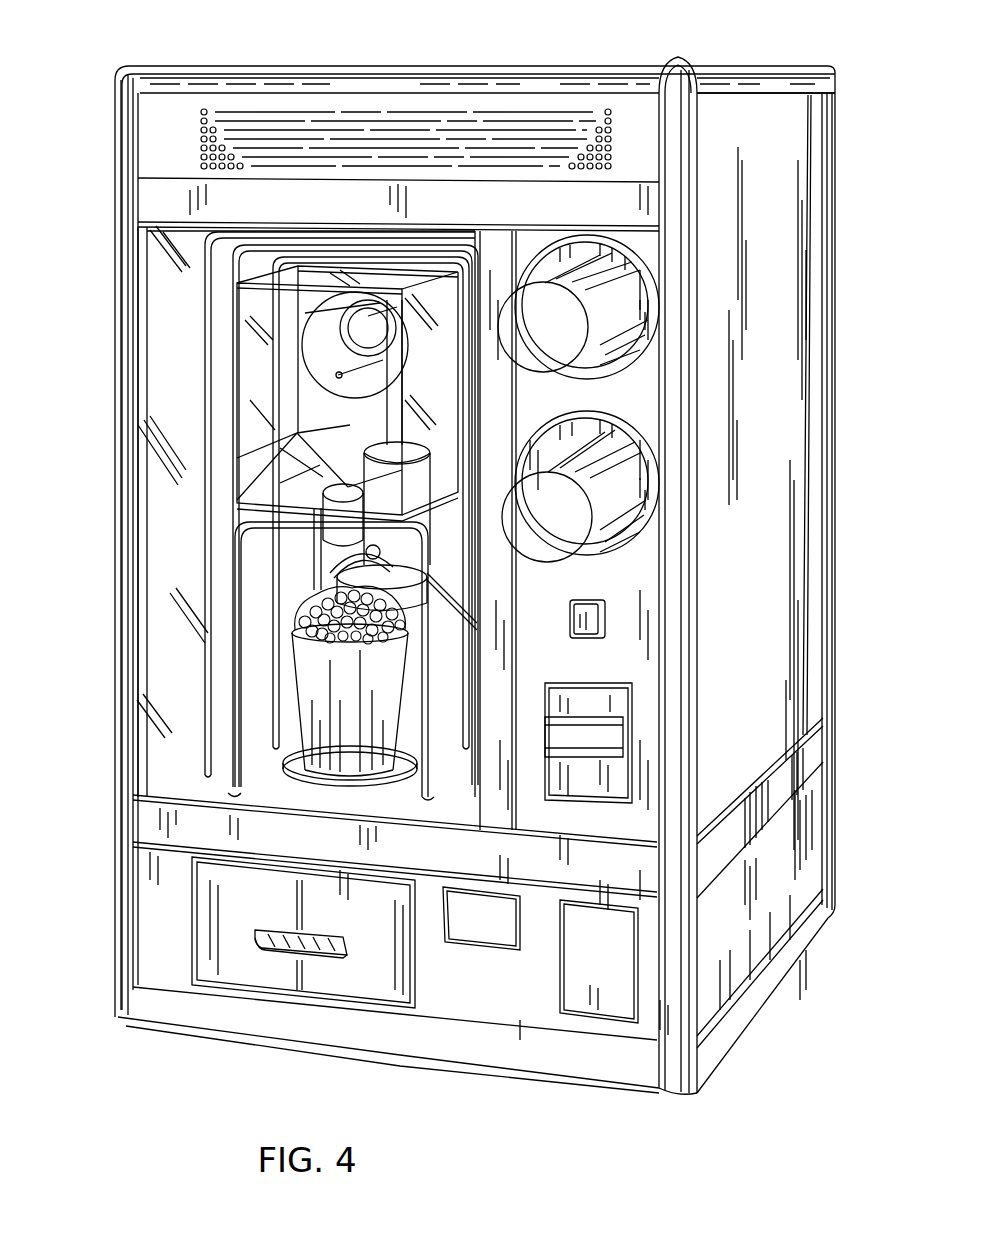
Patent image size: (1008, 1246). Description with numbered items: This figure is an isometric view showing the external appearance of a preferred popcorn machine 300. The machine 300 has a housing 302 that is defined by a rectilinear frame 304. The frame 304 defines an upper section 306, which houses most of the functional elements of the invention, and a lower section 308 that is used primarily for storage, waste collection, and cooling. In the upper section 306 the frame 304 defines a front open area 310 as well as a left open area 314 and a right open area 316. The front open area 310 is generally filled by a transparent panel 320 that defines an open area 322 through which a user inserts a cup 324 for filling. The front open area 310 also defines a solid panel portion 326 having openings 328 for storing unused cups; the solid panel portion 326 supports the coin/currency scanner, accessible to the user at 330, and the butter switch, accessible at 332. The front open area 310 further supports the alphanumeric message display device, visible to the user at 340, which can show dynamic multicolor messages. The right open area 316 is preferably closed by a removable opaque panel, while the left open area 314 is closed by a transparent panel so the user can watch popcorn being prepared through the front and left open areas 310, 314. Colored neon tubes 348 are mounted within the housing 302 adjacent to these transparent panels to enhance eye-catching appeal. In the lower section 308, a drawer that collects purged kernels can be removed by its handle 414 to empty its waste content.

The popcorn machine 300 is at (97, 166).
The housing 302 is at (267, 530).
The rectilinear frame 304 is at (116, 563).
The upper section 306 is at (843, 457).
The lower section 308 is at (838, 792).
The front open area 310 is at (553, 813).
The left open area 314 is at (155, 640).
The right open area 316 is at (762, 633).
The transparent panel 320 is at (452, 800).
The open area 322 is at (250, 572).
The cup 324 is at (313, 685).
The solid panel portion 326 is at (663, 228).
The openings 328 is at (632, 287).
The coin/currency scanner access 330 is at (632, 740).
The butter switch access 332 is at (603, 622).
The message display location 340 is at (430, 113).
The colored neon tubes 348 is at (198, 285).
The handle 414 is at (275, 950).